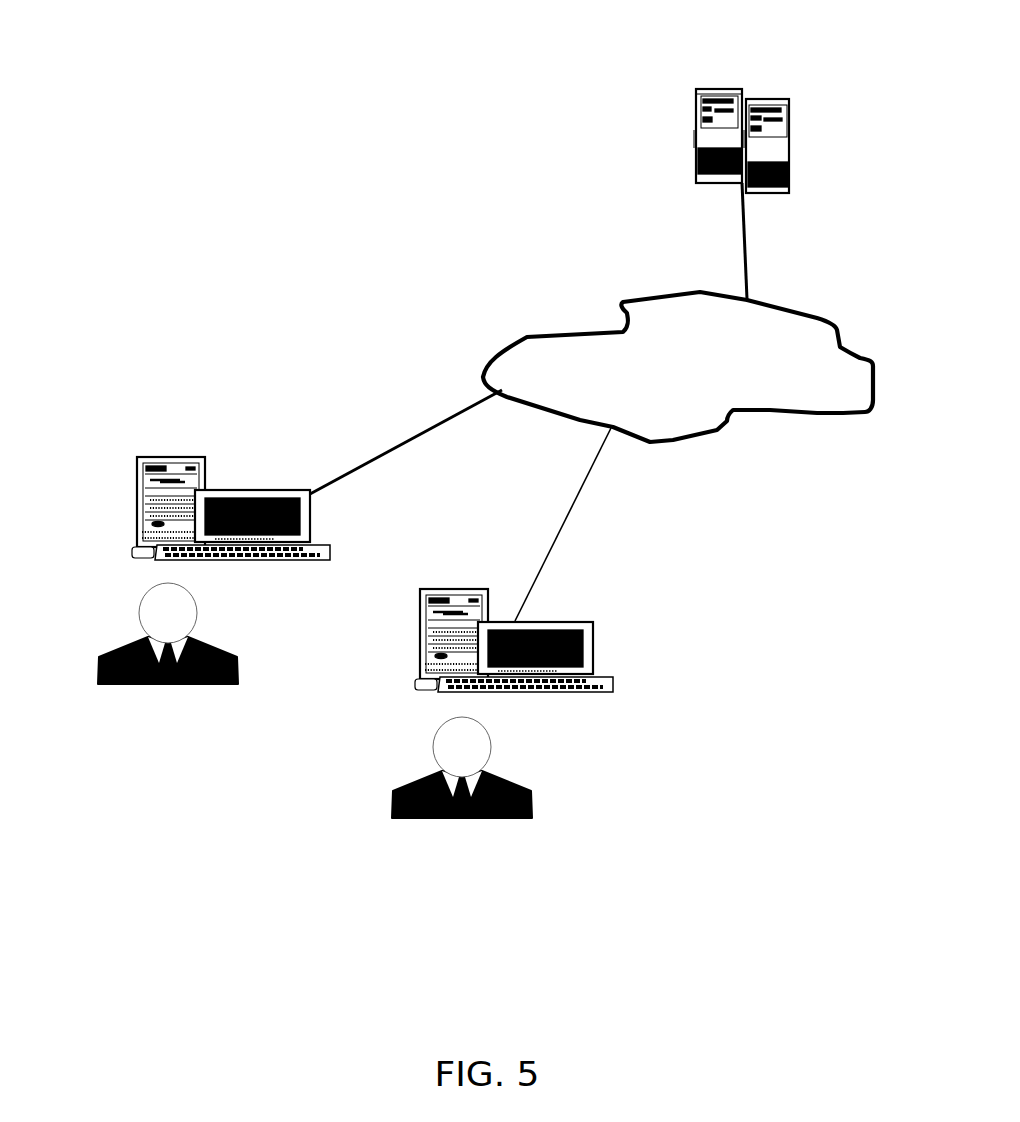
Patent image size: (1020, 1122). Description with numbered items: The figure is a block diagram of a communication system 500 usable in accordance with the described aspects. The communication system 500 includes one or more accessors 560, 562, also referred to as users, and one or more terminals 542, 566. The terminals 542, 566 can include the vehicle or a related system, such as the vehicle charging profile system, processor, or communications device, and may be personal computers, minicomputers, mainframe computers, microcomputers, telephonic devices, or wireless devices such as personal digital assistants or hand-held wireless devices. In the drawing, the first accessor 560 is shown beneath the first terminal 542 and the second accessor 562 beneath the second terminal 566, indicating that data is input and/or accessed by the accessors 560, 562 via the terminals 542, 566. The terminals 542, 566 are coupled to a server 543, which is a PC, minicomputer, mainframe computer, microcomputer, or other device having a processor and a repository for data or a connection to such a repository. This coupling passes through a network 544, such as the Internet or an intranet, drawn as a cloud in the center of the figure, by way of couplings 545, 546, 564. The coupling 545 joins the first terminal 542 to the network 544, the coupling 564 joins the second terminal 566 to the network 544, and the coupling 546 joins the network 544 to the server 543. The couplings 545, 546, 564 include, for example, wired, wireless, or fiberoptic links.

The communication system 500 is at (182, 42).
The server 543 is at (722, 88).
The coupling 546 is at (748, 258).
The network 544 is at (541, 332).
The coupling 545 is at (348, 468).
The terminal 542 is at (170, 457).
The coupling 564 is at (585, 483).
The terminal 566 is at (593, 621).
The accessor 560 is at (128, 640).
The accessor 562 is at (510, 780).